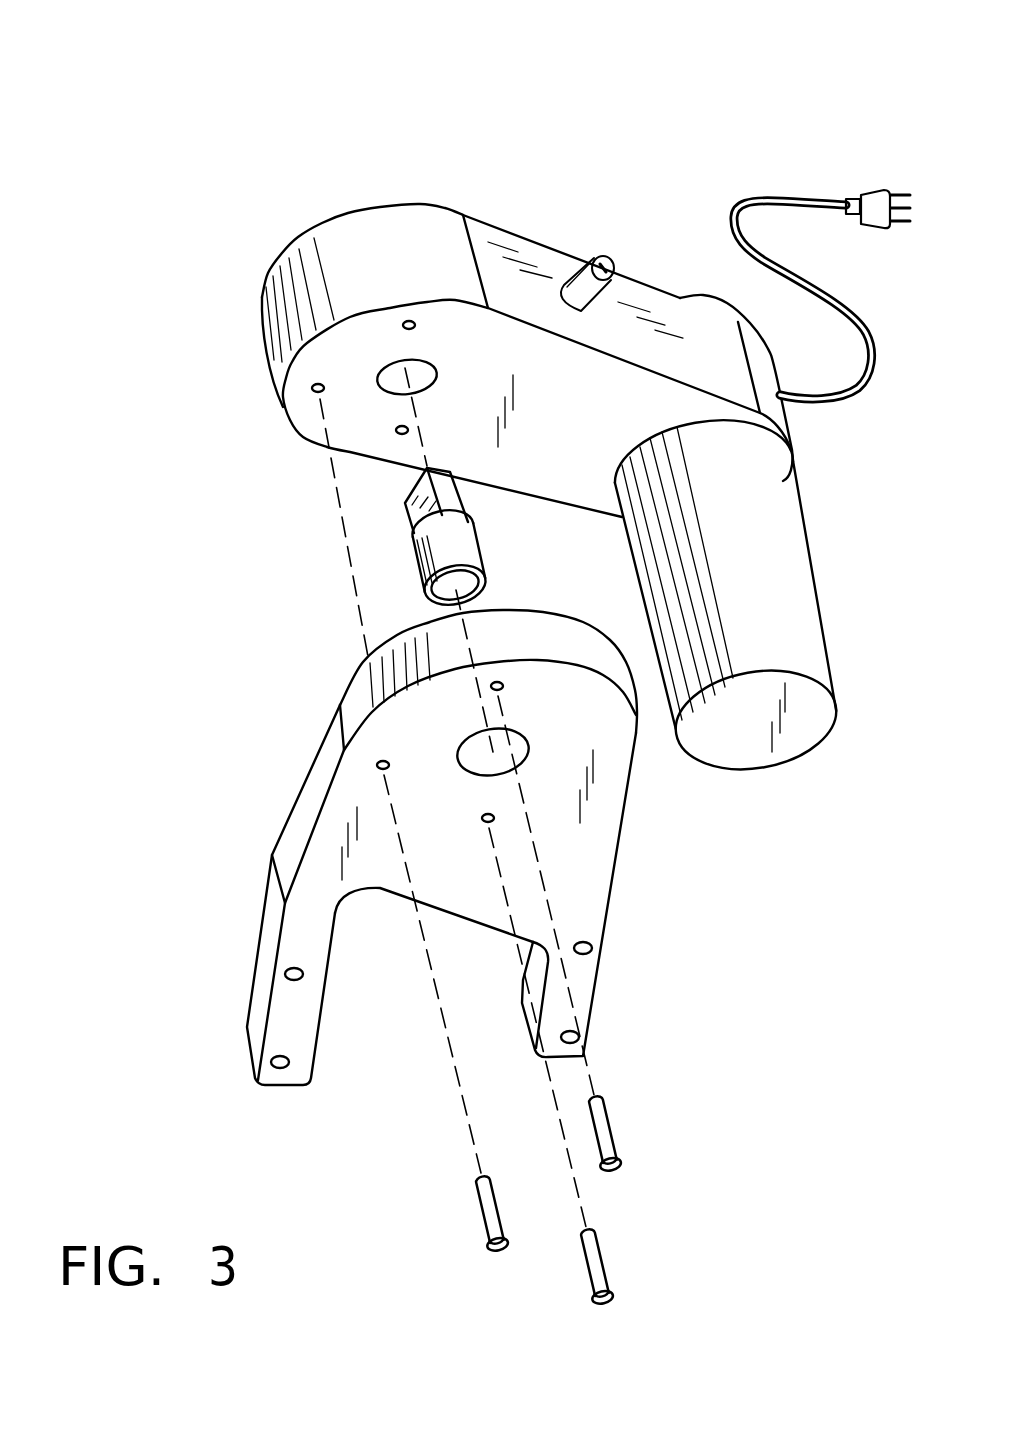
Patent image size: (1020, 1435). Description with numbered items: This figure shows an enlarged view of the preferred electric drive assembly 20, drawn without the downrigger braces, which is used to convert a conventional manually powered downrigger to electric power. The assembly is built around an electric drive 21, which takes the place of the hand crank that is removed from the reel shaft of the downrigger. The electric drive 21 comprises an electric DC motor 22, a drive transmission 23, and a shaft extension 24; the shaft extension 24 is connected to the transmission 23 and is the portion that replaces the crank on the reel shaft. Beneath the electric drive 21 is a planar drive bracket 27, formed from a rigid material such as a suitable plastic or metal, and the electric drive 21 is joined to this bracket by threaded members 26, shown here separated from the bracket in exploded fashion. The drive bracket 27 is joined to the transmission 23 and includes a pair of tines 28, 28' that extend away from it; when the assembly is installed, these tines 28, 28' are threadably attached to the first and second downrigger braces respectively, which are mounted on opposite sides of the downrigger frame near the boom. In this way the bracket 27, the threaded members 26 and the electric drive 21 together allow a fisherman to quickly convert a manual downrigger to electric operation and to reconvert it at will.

The electric drive assembly 20 is at (354, 116).
The electric drive 21 is at (423, 195).
The electric DC motor 22 is at (808, 575).
The drive transmission 23 is at (546, 246).
The shaft extension 24 is at (502, 551).
The threaded members 26 is at (481, 1219).
The planar drive bracket 27 is at (557, 640).
The tine 28 is at (254, 895).
The tine 28' is at (617, 895).